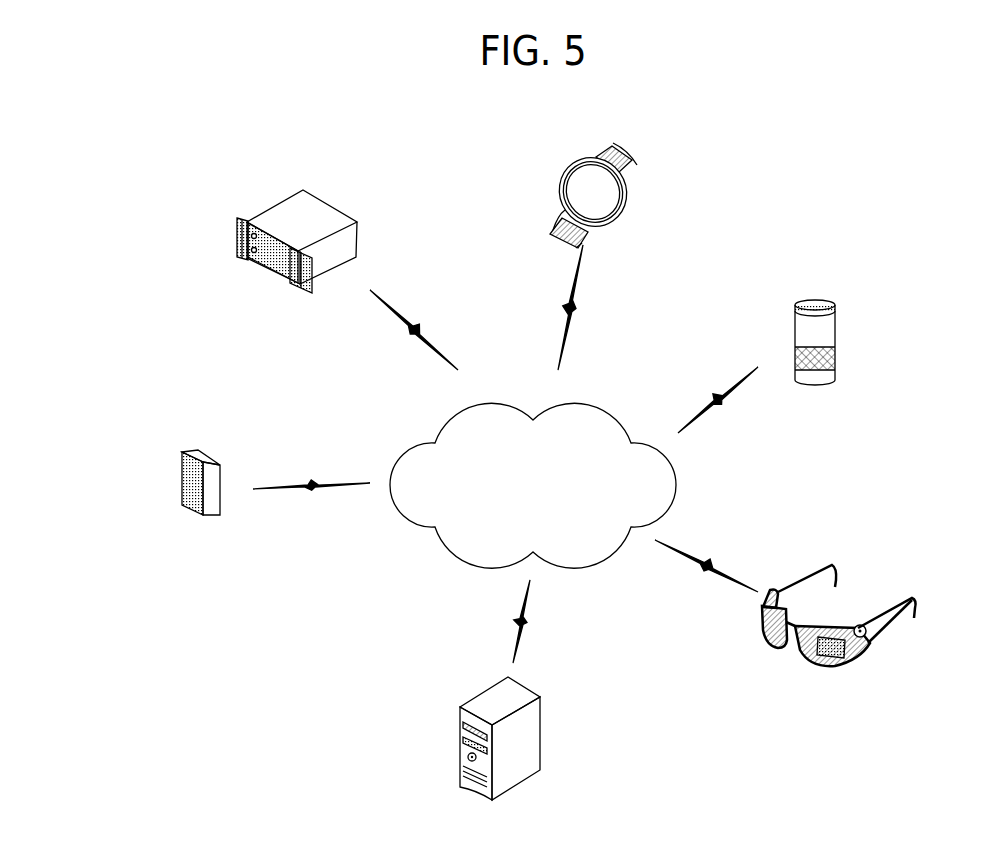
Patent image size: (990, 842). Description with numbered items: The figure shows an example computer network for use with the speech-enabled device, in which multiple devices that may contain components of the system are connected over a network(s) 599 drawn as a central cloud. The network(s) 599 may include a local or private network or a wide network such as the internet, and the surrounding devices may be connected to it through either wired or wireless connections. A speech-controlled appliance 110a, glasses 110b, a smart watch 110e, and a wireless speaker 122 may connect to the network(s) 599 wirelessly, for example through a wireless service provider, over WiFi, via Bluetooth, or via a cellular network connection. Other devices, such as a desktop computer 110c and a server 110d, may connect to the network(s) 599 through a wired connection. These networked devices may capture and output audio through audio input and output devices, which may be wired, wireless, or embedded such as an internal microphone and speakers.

The network(s) 599 is at (533, 485).
The server 110d is at (280, 210).
The smart watch 110e is at (560, 187).
The speech-controlled appliance 110a is at (836, 306).
The glasses 110b is at (832, 566).
The desktop computer 110c is at (448, 722).
The wireless speaker 122 is at (222, 490).